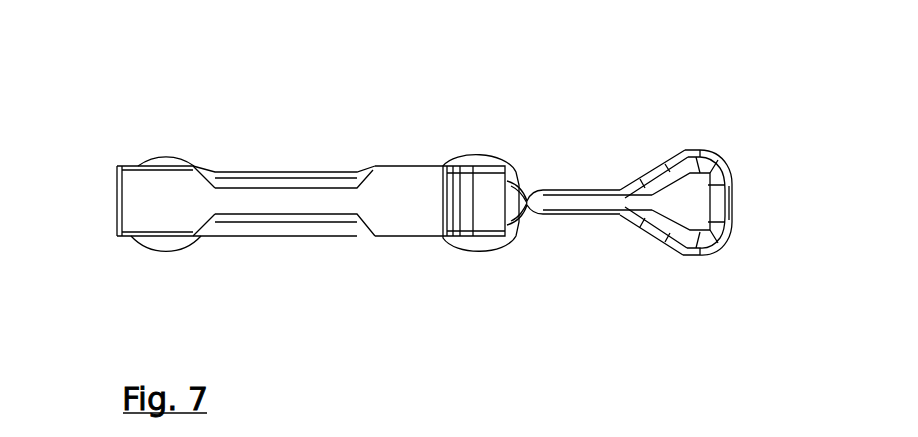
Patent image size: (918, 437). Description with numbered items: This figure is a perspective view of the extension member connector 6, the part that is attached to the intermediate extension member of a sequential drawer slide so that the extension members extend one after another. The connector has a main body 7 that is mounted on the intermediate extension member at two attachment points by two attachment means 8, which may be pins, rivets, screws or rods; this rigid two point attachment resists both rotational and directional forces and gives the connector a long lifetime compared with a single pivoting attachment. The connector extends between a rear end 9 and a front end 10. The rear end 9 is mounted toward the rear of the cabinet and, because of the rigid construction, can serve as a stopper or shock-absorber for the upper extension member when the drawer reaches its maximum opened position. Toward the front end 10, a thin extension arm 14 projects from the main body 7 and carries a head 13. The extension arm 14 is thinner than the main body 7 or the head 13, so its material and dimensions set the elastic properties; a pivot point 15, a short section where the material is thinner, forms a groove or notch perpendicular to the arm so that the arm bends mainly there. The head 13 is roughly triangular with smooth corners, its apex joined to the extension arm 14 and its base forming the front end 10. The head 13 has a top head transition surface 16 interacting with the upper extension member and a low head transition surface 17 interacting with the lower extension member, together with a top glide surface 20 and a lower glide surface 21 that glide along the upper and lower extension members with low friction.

The extension member connector 6 is at (402, 195).
The main body 7 is at (288, 207).
The attachment means 8 is at (160, 153).
The rear end 9 is at (117, 198).
The front end 10 is at (735, 193).
The head 13 is at (690, 205).
The extension arm 14 is at (580, 210).
The pivot point 15 is at (533, 213).
The top head transition surface 16 is at (643, 162).
The low head transition surface 17 is at (652, 243).
The top glide surface 20 is at (715, 150).
The lower glide surface 21 is at (712, 258).